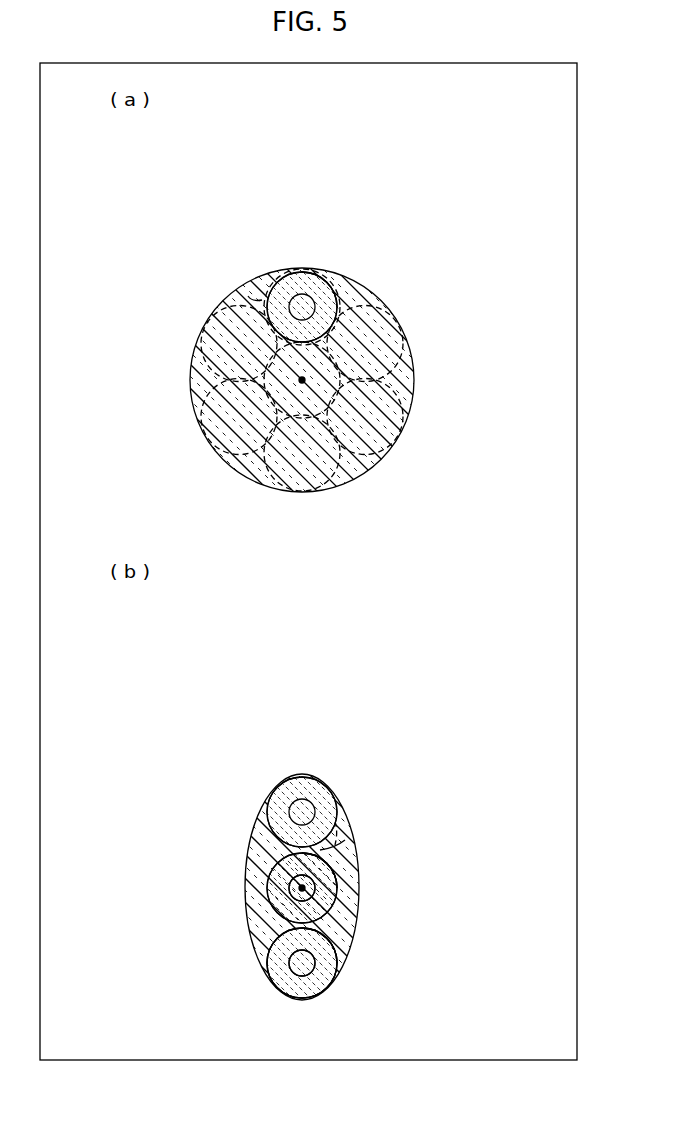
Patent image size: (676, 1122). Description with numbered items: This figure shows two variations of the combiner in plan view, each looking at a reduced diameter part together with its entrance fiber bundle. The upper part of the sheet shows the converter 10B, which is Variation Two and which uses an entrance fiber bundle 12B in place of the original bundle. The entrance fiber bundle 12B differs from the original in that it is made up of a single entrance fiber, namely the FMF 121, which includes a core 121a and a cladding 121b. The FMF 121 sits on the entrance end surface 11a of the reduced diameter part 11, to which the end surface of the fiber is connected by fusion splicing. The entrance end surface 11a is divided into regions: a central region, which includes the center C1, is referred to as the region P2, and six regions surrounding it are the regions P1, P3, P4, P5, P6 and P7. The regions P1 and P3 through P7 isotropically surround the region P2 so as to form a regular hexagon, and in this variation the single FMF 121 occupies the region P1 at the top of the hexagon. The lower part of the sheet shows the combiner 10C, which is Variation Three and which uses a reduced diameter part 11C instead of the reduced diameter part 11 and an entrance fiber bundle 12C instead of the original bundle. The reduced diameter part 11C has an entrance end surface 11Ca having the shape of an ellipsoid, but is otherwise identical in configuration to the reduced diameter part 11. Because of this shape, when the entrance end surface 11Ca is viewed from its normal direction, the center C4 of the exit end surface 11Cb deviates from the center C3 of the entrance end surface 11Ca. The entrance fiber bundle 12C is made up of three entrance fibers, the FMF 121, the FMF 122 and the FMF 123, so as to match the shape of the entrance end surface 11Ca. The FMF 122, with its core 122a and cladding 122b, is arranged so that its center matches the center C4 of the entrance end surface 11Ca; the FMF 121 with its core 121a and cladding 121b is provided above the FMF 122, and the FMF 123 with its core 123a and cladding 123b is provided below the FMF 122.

The converter 10B is at (498, 150).
The combiner 10C is at (467, 633).
The reduced diameter part 11 is at (385, 299).
The entrance end surface 11a is at (248, 296).
The reduced diameter part 11C is at (358, 785).
The entrance end surface 11Ca is at (345, 840).
The exit end surface 11Cb is at (345, 815).
The entrance fiber bundle 12B is at (318, 166).
The entrance fiber bundle 12C is at (313, 673).
The FMF 121 is at (357, 222).
The core 121a is at (290, 297).
The cladding 121b is at (328, 278).
The FMF 122 is at (452, 877).
The core 122a is at (316, 885).
The cladding 122b is at (340, 907).
The FMF 123 is at (452, 955).
The core 123a is at (316, 957).
The cladding 123b is at (340, 978).
The center C1 is at (302, 380).
The center C3 is at (302, 888).
The center C4 is at (275, 848).
The region P1 is at (362, 283).
The region P2 is at (413, 388).
The region P3 is at (367, 478).
The region P4 is at (242, 298).
The region P5 is at (412, 344).
The region P6 is at (190, 385).
The region P7 is at (412, 407).